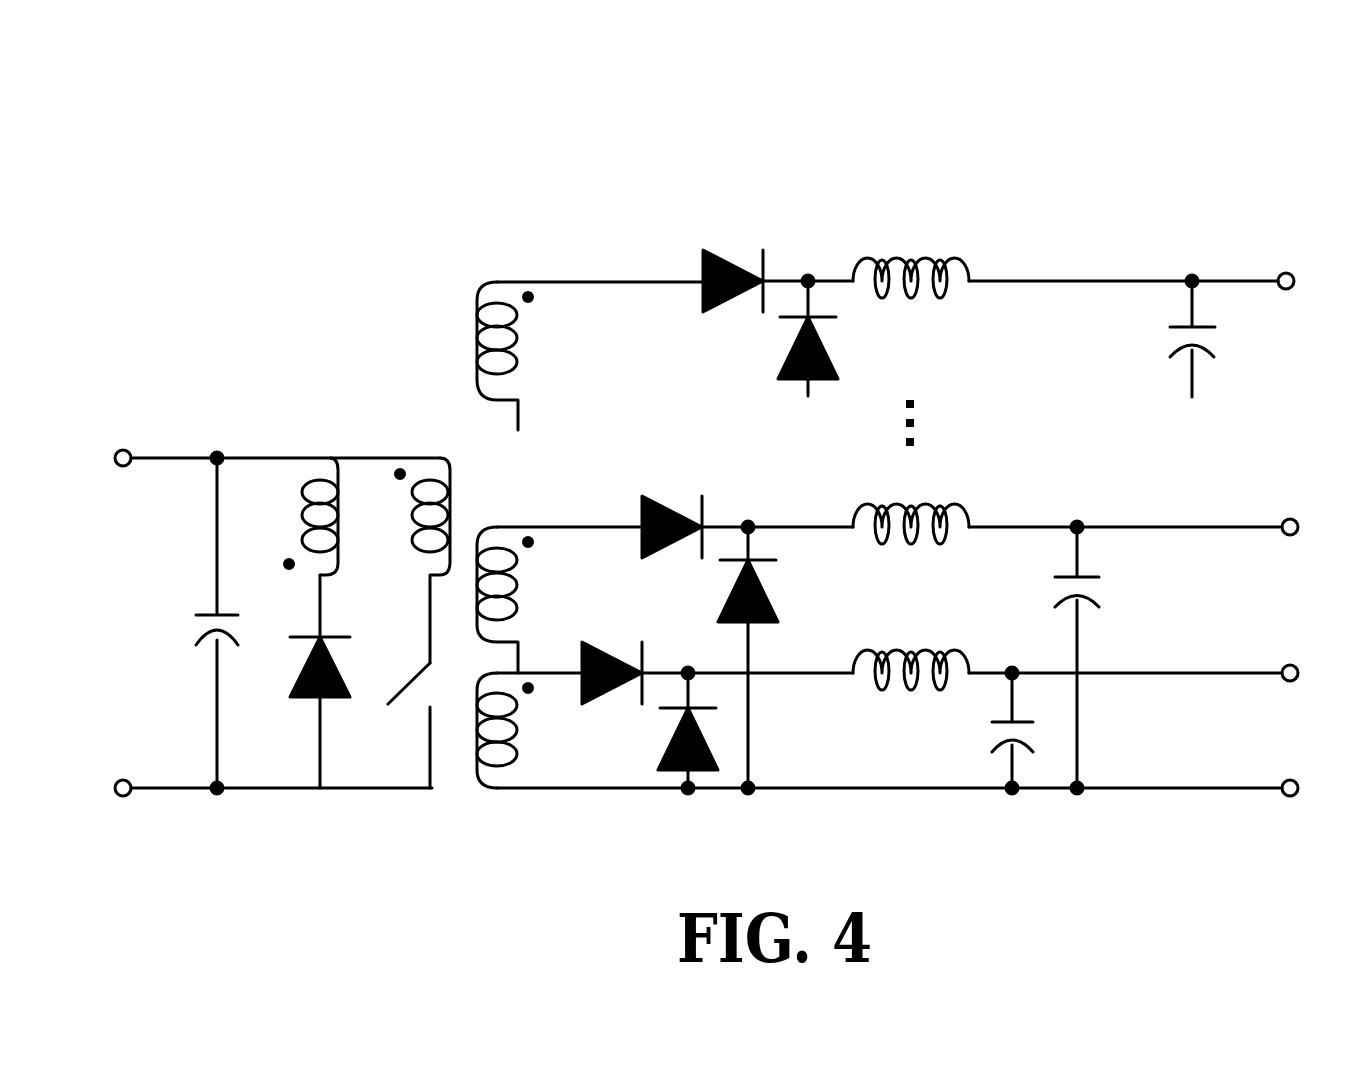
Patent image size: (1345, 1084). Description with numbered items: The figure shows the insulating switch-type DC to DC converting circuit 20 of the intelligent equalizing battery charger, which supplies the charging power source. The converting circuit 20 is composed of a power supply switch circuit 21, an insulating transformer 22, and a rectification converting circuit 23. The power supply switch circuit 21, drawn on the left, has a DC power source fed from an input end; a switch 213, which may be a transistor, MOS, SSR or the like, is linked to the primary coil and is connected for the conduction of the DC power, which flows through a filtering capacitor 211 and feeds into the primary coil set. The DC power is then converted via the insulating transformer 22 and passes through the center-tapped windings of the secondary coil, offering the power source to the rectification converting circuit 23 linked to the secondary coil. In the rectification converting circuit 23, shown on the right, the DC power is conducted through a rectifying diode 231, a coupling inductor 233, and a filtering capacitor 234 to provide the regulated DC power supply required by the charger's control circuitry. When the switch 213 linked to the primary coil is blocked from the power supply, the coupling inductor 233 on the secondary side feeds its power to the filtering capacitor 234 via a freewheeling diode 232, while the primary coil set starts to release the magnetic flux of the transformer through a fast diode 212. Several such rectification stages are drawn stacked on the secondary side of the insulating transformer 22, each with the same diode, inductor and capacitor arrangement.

The insulating switch-type DC to DC converting circuit 20 is at (243, 203).
The power supply switch circuit 21 is at (280, 458).
The filtering capacitor 211 is at (190, 612).
The fast diode 212 is at (303, 697).
The switch 213 is at (409, 698).
The insulating transformer 22 is at (467, 438).
The rectification converting circuit 23 is at (852, 237).
The rectifying diode 231 is at (597, 640).
The freewheeling diode 232 is at (658, 738).
The coupling inductor 233 is at (912, 645).
The filtering capacitor 234 is at (988, 740).